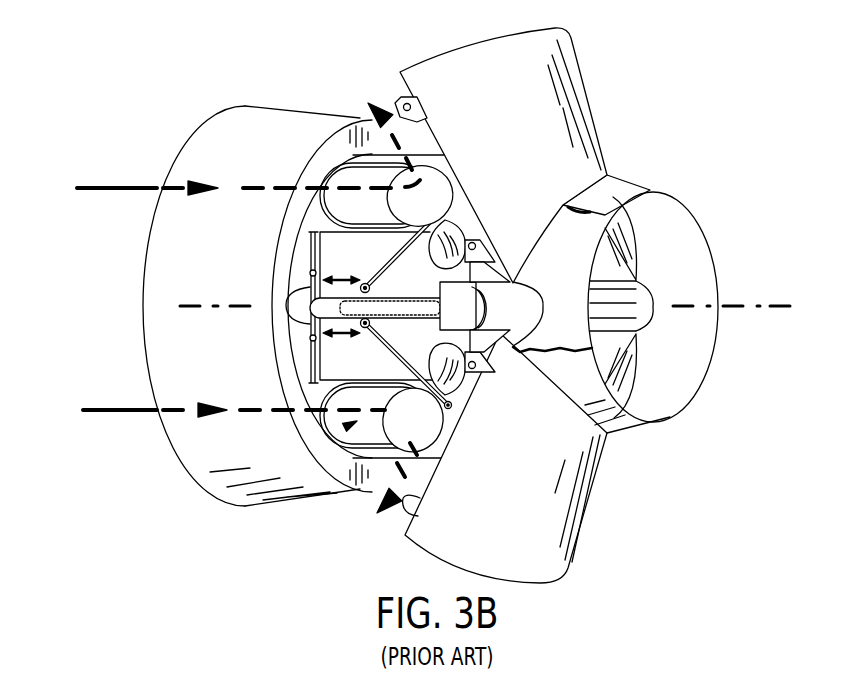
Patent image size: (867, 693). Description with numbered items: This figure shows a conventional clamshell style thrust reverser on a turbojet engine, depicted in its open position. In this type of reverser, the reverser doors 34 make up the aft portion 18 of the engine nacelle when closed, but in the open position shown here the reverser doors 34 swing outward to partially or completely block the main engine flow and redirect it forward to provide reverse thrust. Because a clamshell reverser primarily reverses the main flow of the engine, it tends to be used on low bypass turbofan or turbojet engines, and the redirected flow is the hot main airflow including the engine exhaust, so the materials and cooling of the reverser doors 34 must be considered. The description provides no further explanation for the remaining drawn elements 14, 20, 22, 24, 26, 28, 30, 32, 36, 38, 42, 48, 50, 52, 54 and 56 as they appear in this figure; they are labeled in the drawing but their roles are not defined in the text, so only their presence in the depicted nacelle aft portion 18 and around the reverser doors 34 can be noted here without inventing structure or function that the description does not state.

The inlet airflow 14 is at (113, 186).
The aft portion 18 is at (240, 105).
The bypass airflow 20 is at (350, 426).
The engine centerline axis 22 is at (745, 306).
The nacelle rear ring 24 is at (285, 130).
The nacelle inlet 26 is at (141, 322).
The exhaust nozzle ring 28 is at (680, 363).
The core engine hub 30 is at (350, 265).
The fan blade root 32 is at (402, 215).
The reverser doors 34 is at (494, 129).
The hinge pin 36 is at (480, 244).
The actuator shaft 38 is at (394, 318).
The pivot arm 42 is at (467, 235).
The guide slot 48 is at (326, 213).
The blade root face 50 is at (566, 205).
The actuating link 52 is at (392, 266).
The reverse flow direction 54 is at (388, 101).
The actuator rod 56 is at (311, 262).